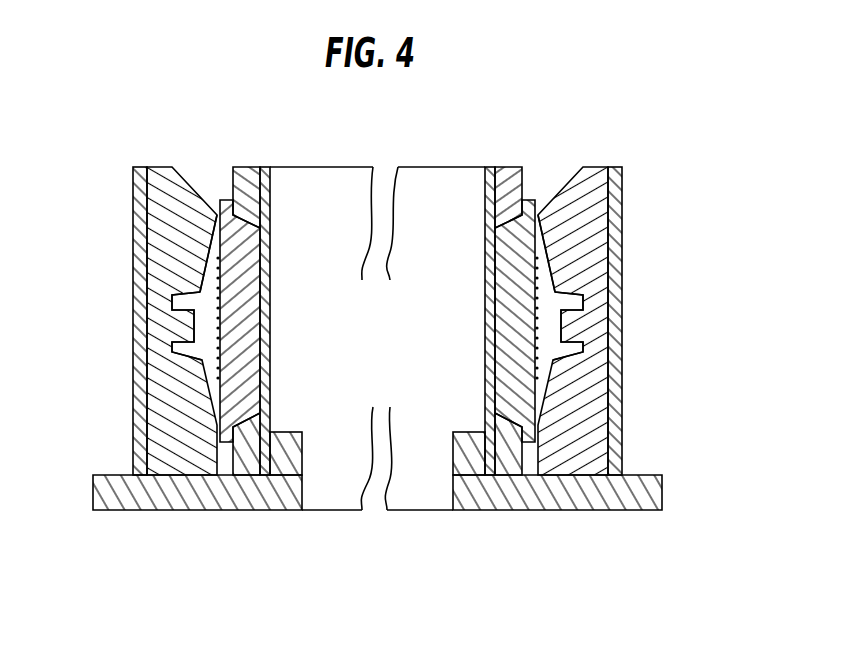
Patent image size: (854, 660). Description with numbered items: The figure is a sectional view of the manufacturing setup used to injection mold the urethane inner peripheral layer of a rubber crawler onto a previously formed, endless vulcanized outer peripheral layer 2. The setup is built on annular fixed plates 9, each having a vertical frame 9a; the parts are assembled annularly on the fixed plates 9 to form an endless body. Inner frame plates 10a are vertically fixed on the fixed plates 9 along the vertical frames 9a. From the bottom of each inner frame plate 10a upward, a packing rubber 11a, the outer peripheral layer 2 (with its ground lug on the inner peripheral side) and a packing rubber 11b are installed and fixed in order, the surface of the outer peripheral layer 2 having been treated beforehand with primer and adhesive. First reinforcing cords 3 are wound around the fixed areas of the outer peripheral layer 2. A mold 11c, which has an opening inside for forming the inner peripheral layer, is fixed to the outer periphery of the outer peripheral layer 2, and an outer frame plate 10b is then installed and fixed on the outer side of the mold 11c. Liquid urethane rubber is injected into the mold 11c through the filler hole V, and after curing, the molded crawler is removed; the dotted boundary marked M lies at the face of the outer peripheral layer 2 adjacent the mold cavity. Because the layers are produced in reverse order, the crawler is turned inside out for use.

The outer peripheral layer 2 is at (252, 272).
The first reinforcing cords 3 is at (218, 292).
The annular fixed plate 9 is at (214, 505).
The vertical frame 9a is at (300, 445).
The inner frame plate 10a is at (267, 170).
The outer frame plate 10b is at (138, 194).
The packing rubber 11a is at (243, 480).
The packing rubber 11b is at (247, 183).
The mold 11c is at (163, 178).
The adhesive M is at (217, 250).
The filler hole V is at (212, 197).